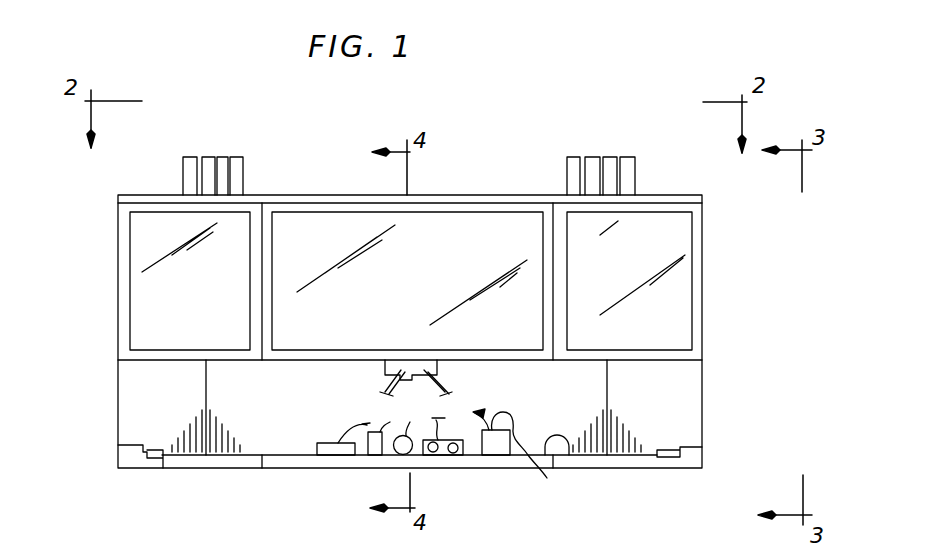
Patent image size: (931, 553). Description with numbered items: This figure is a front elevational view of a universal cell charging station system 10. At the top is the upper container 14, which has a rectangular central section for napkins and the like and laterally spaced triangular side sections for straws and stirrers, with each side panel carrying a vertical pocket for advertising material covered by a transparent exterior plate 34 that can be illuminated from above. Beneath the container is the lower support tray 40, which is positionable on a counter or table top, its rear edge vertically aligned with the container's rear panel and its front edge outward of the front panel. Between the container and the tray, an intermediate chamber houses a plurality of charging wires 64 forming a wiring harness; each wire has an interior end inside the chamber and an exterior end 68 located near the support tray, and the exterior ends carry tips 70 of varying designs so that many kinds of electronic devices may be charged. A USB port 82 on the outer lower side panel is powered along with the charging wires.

The universal cell charging station system 10 is at (512, 117).
The upper container 14 is at (699, 290).
The transparent exterior plates 34 is at (227, 250).
The lower support tray 40 is at (568, 460).
The charging wires 64 is at (385, 383).
The exterior end 68 is at (380, 455).
The tips 70 is at (407, 455).
The USB port 82 is at (120, 445).